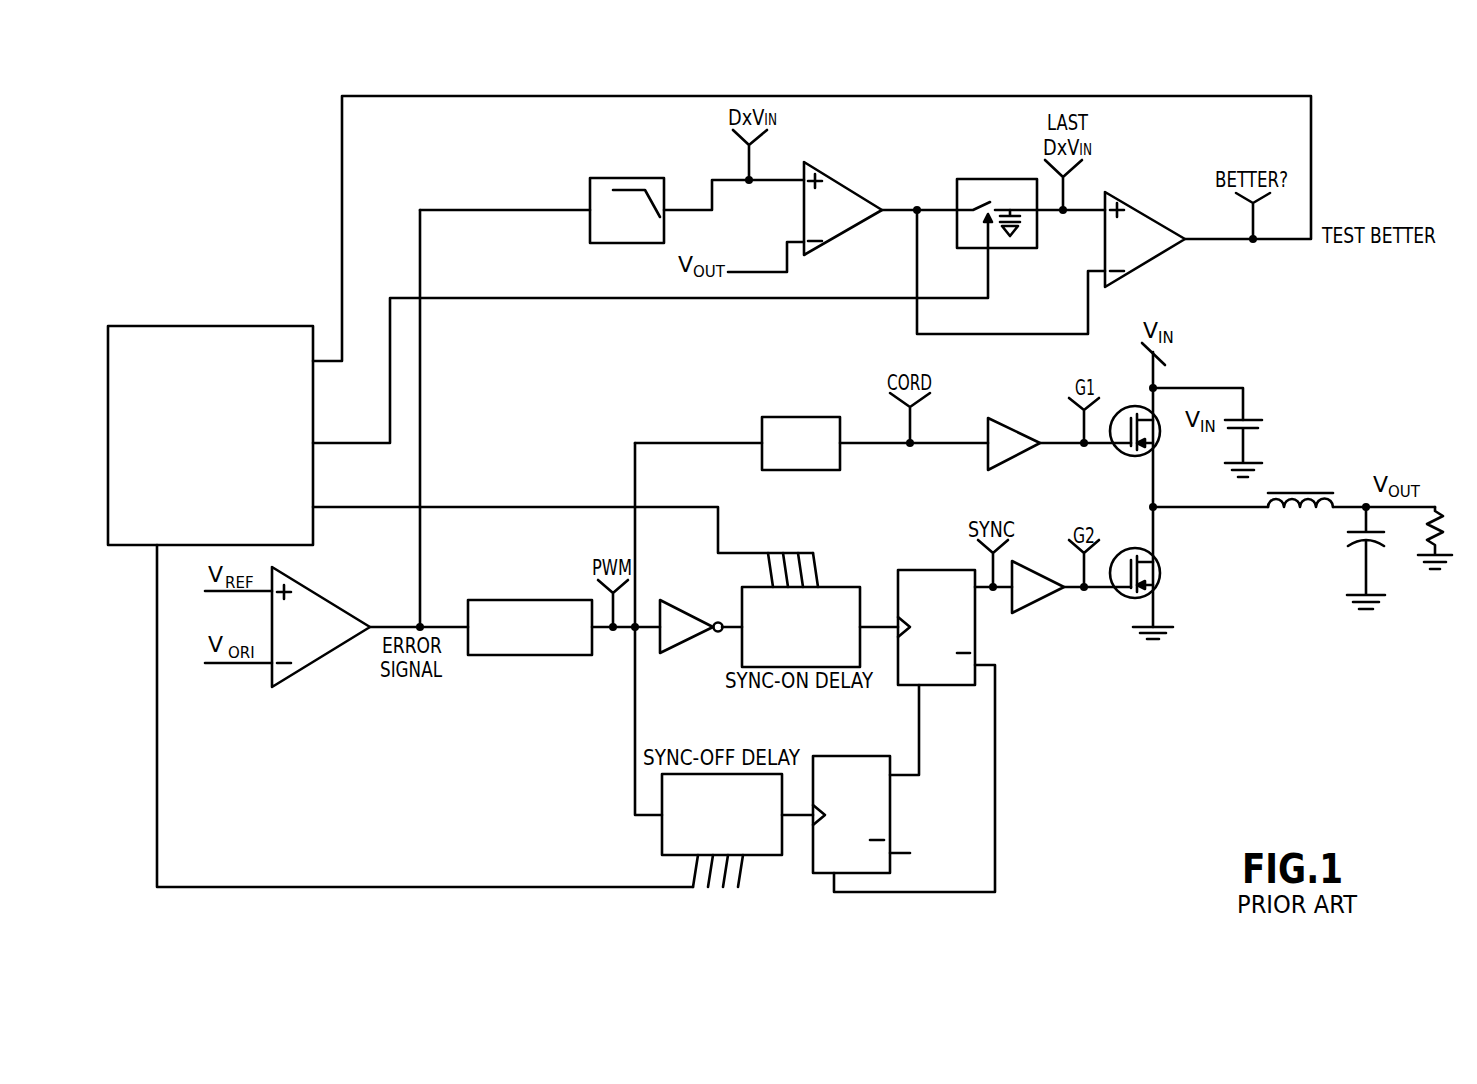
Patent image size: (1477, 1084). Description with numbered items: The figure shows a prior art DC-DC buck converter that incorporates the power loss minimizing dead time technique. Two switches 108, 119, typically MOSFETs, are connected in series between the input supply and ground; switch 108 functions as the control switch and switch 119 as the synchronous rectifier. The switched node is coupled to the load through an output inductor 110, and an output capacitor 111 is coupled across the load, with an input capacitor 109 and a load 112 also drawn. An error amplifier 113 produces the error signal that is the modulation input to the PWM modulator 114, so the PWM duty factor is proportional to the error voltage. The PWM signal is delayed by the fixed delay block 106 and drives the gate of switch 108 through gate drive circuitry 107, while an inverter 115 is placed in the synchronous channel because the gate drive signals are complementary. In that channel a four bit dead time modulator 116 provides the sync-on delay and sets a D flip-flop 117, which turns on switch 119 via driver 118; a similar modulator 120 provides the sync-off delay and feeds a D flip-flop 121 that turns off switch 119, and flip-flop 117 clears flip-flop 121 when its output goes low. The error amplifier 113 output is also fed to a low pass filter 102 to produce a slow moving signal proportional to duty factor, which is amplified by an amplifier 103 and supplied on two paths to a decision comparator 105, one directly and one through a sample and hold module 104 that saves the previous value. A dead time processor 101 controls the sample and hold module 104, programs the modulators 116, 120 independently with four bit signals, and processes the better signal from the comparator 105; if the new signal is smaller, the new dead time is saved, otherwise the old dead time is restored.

The dead time processor 101 is at (155, 326).
The low pass filter 102 is at (630, 178).
The amplifier 103 is at (845, 187).
The sample and hold module 104 is at (988, 179).
The decision comparator 105 is at (1147, 217).
The fixed delay block 106 is at (800, 417).
The gate drive circuitry 107 is at (1010, 430).
The switch 108 is at (1158, 440).
The input capacitor 109 is at (1253, 415).
The output inductor 110 is at (1286, 493).
The output capacitor 111 is at (1349, 524).
The load resistor 112 is at (1425, 520).
The error amplifier 113 is at (325, 600).
The PWM modulator 114 is at (493, 600).
The inverter 115 is at (685, 613).
The four bit dead time modulator 116 is at (832, 587).
The D flip-flop 117 is at (915, 570).
The gate drive circuitry 118 is at (1038, 600).
The switch 119 is at (1160, 570).
The dead time modulator 120 is at (660, 832).
The D flip-flop 121 is at (890, 812).